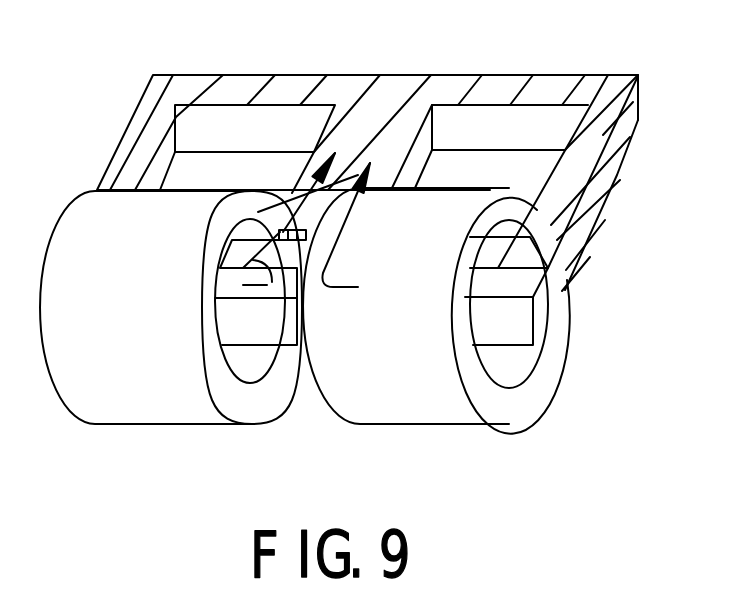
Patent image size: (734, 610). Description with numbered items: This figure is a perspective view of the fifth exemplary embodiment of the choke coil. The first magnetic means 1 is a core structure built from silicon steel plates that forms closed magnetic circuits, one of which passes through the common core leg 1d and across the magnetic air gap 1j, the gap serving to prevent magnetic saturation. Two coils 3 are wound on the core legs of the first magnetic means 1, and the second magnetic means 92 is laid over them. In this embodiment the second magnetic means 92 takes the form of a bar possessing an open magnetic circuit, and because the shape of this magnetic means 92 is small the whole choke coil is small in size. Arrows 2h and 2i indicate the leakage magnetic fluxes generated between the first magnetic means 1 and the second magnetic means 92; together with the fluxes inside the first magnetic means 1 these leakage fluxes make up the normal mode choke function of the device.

The first magnetic means 1 is at (394, 80).
The common core leg 1d is at (267, 283).
The magnetic air gap 1j is at (291, 232).
The leakage magnetic flux arrow 2h is at (333, 287).
The leakage magnetic flux arrow 2i is at (293, 230).
The coil 3 is at (138, 405).
The second magnetic means 92 is at (505, 330).